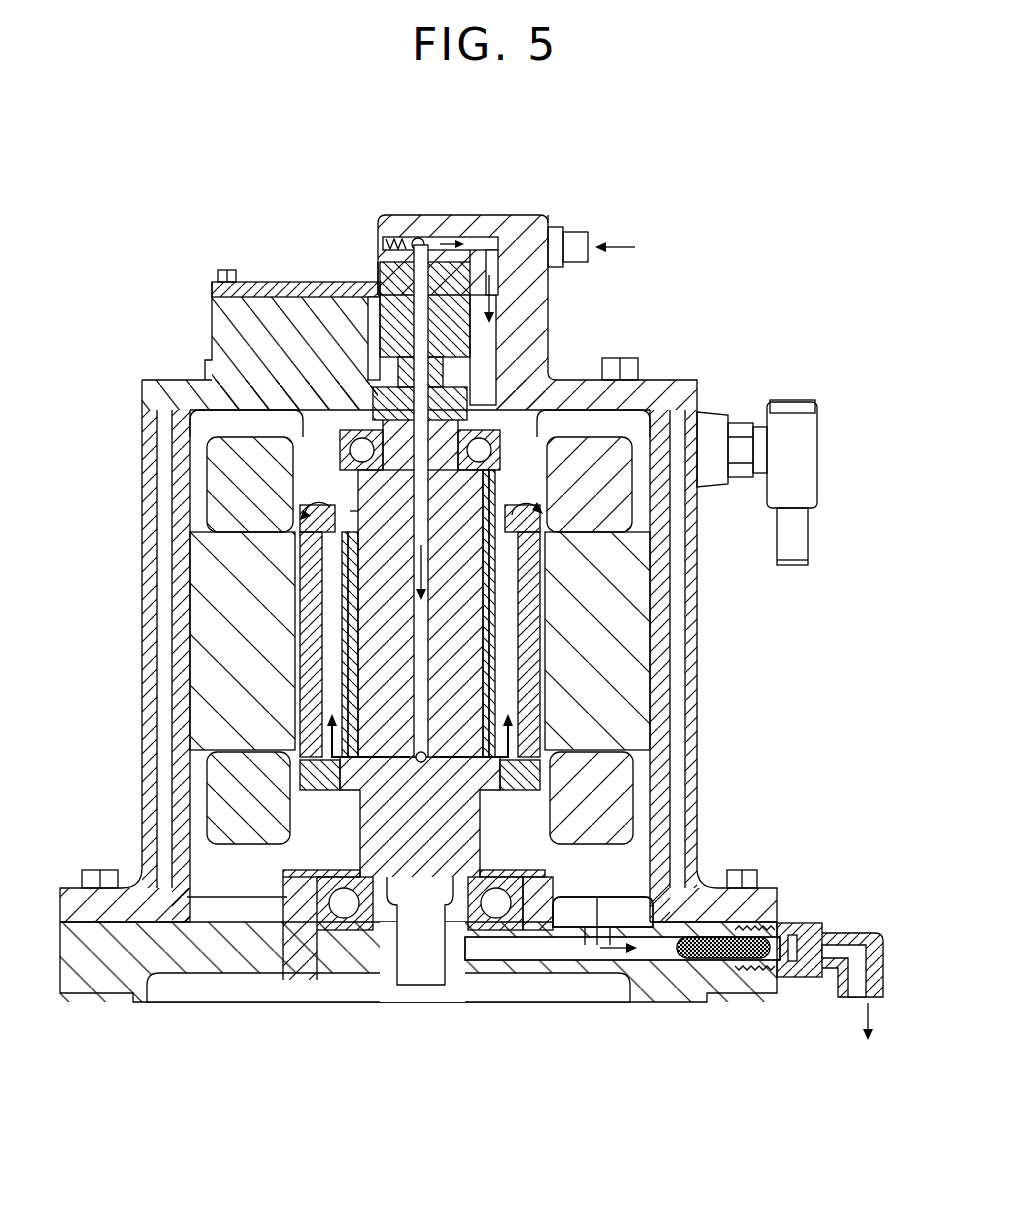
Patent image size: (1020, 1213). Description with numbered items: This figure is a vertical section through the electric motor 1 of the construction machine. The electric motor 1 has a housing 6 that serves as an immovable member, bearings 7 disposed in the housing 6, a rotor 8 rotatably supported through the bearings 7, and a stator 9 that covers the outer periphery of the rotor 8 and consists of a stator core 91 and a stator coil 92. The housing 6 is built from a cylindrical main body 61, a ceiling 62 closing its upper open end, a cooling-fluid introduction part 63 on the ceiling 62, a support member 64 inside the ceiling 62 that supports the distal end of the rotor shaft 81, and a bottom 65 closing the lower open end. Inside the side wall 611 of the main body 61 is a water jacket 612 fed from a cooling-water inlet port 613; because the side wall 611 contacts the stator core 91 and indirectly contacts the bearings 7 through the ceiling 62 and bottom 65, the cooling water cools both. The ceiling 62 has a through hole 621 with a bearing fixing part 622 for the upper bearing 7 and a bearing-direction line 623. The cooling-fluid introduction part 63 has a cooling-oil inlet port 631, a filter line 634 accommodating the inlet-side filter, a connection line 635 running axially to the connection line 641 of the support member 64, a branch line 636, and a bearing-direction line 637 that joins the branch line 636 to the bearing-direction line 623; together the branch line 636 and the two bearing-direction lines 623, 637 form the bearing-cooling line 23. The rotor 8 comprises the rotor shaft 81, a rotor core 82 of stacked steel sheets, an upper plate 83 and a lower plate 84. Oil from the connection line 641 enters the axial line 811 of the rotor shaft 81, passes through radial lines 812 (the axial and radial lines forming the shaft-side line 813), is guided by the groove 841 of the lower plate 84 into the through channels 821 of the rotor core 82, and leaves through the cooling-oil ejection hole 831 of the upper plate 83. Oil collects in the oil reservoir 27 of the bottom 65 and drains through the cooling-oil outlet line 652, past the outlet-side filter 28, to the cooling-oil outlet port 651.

The electric motor 1 is at (535, 138).
The housing 6 is at (680, 360).
The bearings 7 is at (276, 300).
The rotor 8 is at (480, 862).
The stator 9 is at (469, 640).
The bearing-cooling line 23 is at (603, 145).
The oil reservoir 27 is at (608, 910).
The outlet-side filter 28 is at (726, 990).
The main body 61 is at (418, 596).
The ceiling 62 is at (394, 326).
The cooling-fluid introduction part 63 is at (518, 231).
The support member 64 is at (497, 357).
The bottom 65 is at (105, 1000).
The rotor shaft 81 is at (382, 641).
The rotor core 82 is at (527, 766).
The upper plate 83 is at (545, 530).
The lower plate 84 is at (305, 772).
The stator core 91 is at (635, 737).
The stator coil 92 is at (625, 790).
The side wall 611 is at (700, 580).
The water jacket 612 is at (672, 625).
The cooling-water inlet port 613 is at (795, 570).
The through hole 621 is at (318, 297).
The bearing fixing part 622 is at (208, 368).
The bearing-direction line 623 is at (528, 298).
The cooling-oil inlet port 631 is at (590, 258).
The filter line 634 is at (428, 235).
The connection line 635 is at (392, 240).
The branch line 636 is at (492, 240).
The bearing-direction line 637 is at (495, 285).
The connection line 641 is at (378, 322).
The cooling-oil outlet port 651 is at (847, 940).
The cooling-oil outlet line 652 is at (645, 963).
The axial line 811 is at (343, 660).
The radial lines 812 is at (347, 700).
The shaft-side line 813 is at (272, 613).
The through channels 821 is at (325, 600).
The cooling-oil ejection hole 831 is at (330, 528).
The groove 841 is at (350, 772).